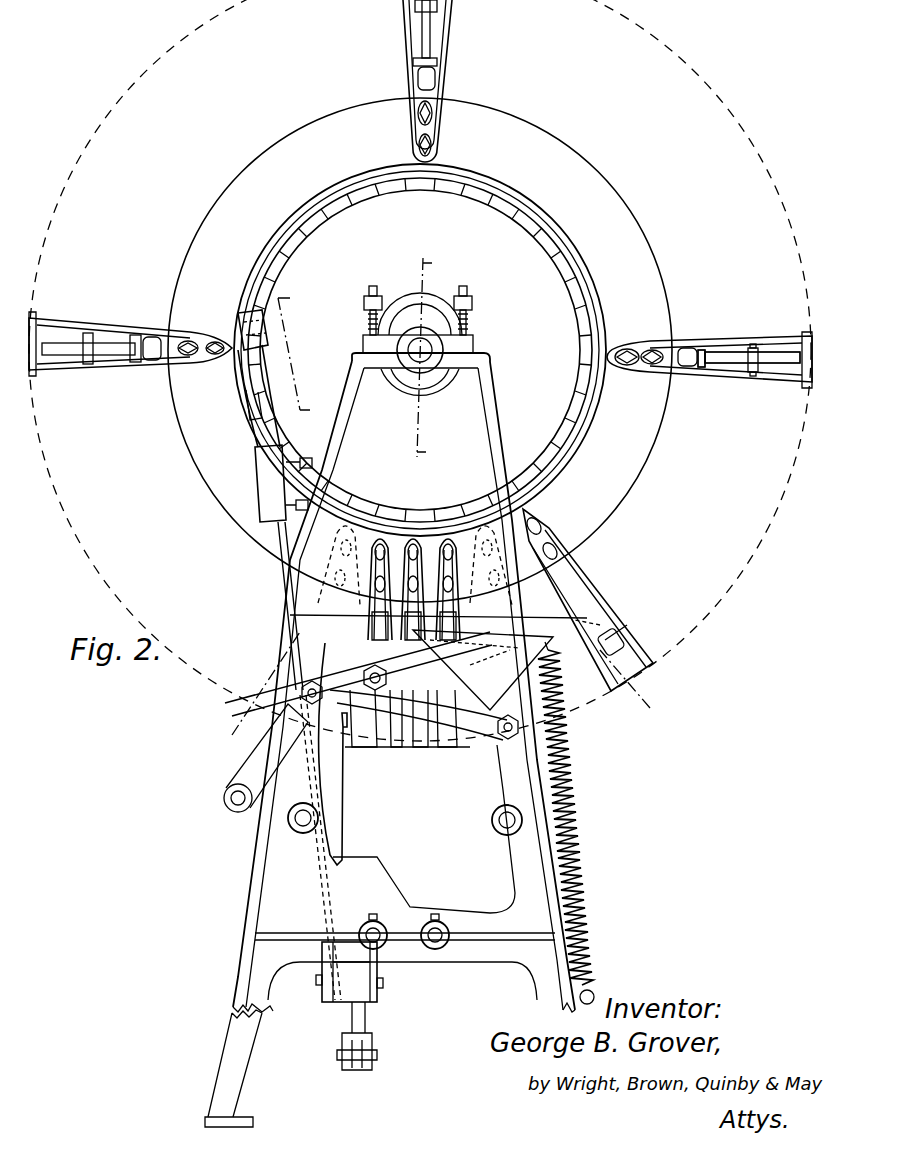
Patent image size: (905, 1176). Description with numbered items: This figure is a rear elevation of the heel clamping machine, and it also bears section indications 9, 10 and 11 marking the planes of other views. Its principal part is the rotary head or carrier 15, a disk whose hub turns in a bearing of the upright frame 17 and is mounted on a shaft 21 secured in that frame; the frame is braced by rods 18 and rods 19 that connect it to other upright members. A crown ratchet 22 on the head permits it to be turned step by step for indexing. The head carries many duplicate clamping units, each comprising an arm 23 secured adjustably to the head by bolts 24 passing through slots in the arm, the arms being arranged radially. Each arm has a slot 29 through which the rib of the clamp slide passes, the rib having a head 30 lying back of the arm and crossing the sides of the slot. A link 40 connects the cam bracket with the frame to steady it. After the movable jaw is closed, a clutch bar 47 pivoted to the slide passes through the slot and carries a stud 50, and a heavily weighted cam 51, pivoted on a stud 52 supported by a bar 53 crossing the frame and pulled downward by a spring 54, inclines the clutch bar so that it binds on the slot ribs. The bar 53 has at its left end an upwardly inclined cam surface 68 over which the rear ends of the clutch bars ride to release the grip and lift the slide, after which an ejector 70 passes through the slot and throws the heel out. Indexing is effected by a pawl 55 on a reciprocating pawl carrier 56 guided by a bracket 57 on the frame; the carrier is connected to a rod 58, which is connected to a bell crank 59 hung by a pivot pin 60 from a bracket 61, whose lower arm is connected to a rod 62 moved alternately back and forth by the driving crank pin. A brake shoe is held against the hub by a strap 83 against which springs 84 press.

The section line 9 is at (443, 694).
The section line 10 is at (299, 356).
The section line 11 is at (421, 357).
The rotary head 15 is at (420, 350).
The upright frame 17 is at (523, 760).
The brace rods 18 is at (303, 826).
The brace rods 19 is at (435, 917).
The shaft 21 is at (425, 345).
The crown ratchet 22 is at (568, 292).
The arm 23 is at (432, 98).
The bolts 24 is at (650, 364).
The slot 29 is at (735, 366).
The head 30 is at (580, 605).
The link 40 is at (236, 784).
The clutch bar 47 is at (760, 368).
The stud 50 is at (754, 344).
The cam 51 is at (570, 618).
The stud 52 is at (405, 748).
The bar 53 is at (470, 745).
The spring 54 is at (585, 858).
The pawl 55 is at (236, 322).
The pawl carrier 56 is at (250, 400).
The bracket 57 is at (290, 463).
The rod 58 is at (290, 598).
The bell crank 59 is at (366, 1017).
The pivot pin 60 is at (318, 988).
The bracket 61 is at (378, 982).
The rod 62 is at (356, 1072).
The cam surface 68 is at (350, 748).
The ejector 70 is at (345, 826).
The strap 83 is at (411, 325).
The springs 84 is at (370, 318).